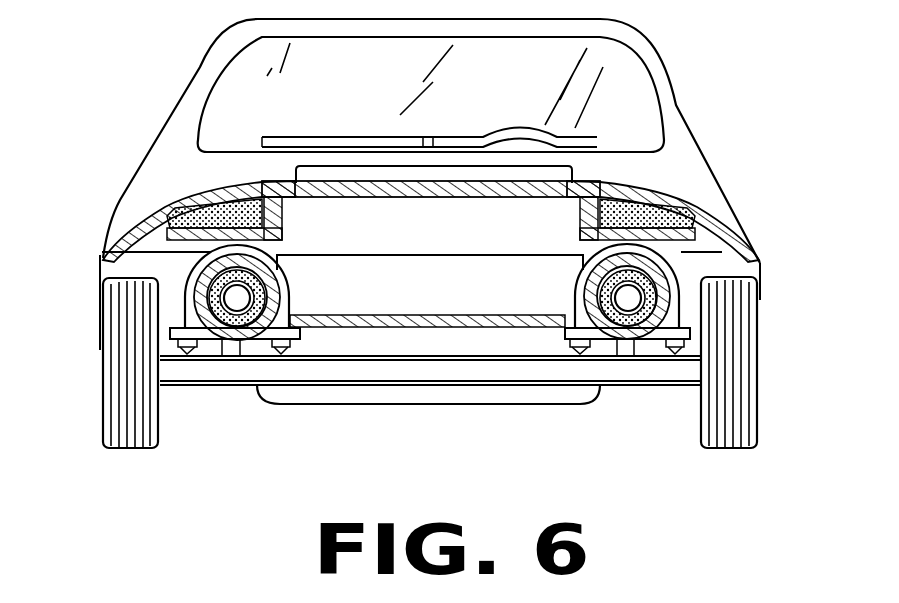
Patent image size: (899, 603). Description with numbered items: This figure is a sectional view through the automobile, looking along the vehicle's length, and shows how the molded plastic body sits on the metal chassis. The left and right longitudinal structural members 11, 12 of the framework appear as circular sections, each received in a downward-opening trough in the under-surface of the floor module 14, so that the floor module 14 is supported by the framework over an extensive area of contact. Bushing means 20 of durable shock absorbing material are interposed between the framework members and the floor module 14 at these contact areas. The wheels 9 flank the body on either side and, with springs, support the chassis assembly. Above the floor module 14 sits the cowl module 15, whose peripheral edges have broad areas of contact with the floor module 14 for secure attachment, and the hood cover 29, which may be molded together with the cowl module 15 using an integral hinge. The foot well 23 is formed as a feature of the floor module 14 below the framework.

The wheels 9 is at (103, 425).
The left longitudinal structural member 11 is at (627, 330).
The right longitudinal structural member 12 is at (222, 338).
The floor module 14 is at (757, 267).
The cowl module 15 is at (175, 200).
The bushing means 20 is at (233, 338).
The foot well 23 is at (387, 407).
The hood cover 29 is at (440, 198).